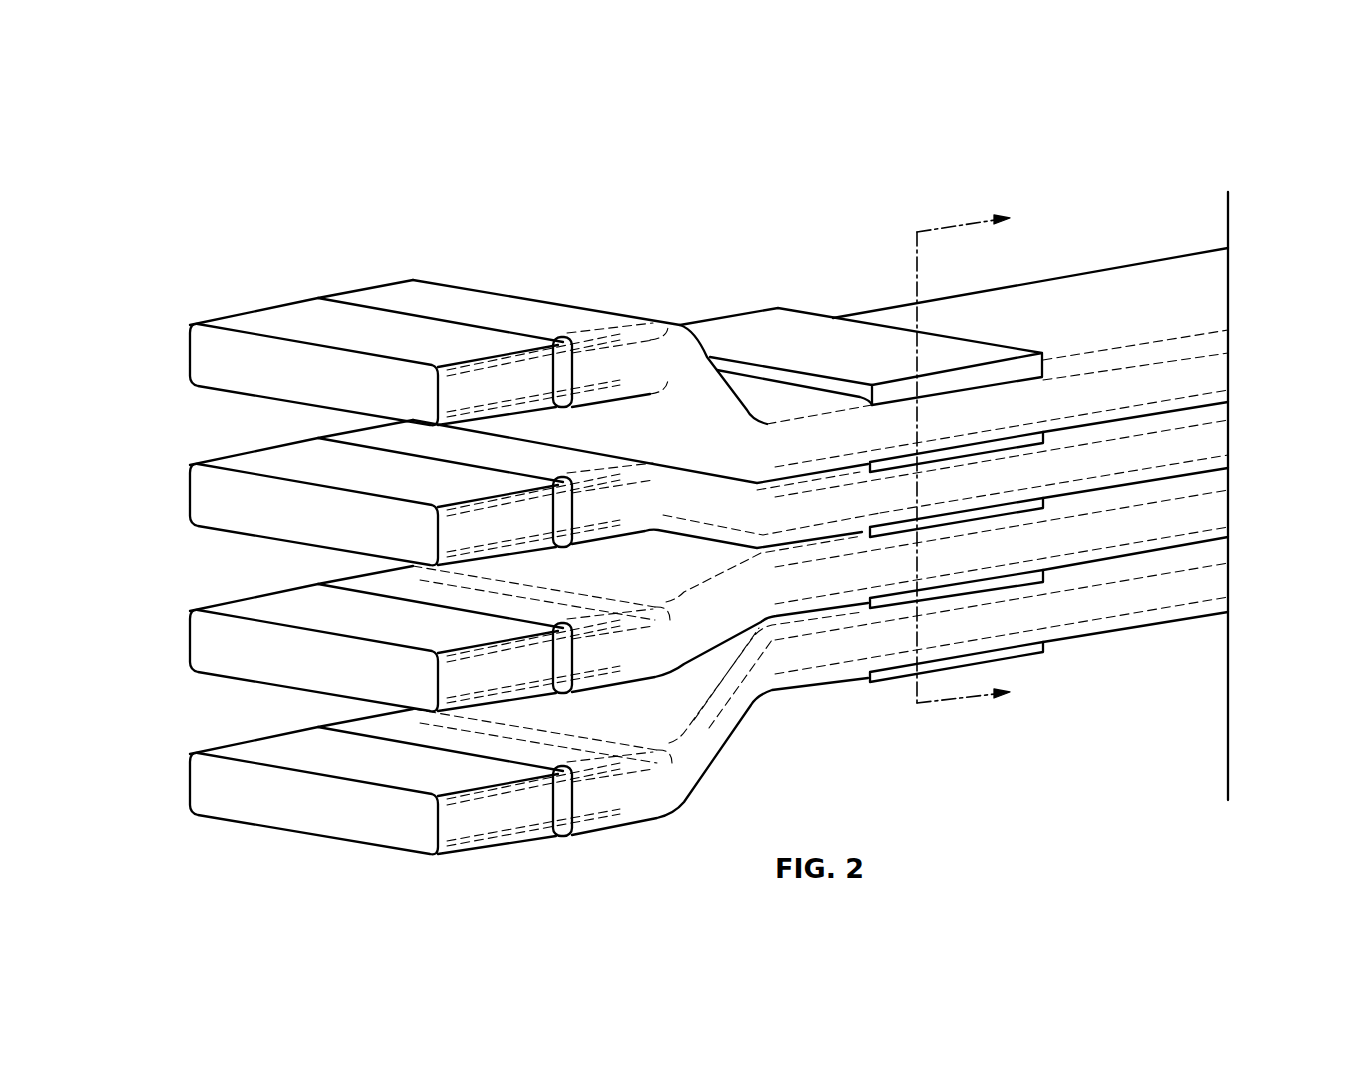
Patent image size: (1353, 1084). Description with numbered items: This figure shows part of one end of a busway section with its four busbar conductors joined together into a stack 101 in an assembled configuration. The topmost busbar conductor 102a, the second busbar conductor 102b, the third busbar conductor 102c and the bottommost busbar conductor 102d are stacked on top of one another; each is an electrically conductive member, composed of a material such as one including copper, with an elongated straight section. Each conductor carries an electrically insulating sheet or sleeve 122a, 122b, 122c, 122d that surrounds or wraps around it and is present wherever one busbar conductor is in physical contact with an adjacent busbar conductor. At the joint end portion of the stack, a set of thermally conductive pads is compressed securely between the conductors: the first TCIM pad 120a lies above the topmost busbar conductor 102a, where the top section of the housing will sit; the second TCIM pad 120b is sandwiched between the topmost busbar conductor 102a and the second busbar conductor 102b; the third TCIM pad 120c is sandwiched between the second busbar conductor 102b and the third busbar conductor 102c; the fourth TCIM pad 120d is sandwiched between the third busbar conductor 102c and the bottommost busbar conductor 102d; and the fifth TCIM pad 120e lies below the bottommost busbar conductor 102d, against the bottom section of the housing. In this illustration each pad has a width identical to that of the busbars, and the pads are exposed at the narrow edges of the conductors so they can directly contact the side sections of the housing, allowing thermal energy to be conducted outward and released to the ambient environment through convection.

The stack 101 is at (1176, 152).
The topmost busbar conductor 102a is at (207, 353).
The second busbar conductor 102b is at (207, 491).
The third busbar conductor 102c is at (207, 636).
The bottommost busbar conductor 102d is at (207, 781).
The electrically insulating sleeve 122a is at (385, 297).
The electrically insulating sleeve 122b is at (385, 437).
The electrically insulating sleeve 122c is at (385, 583).
The electrically insulating sleeve 122d is at (387, 726).
The first TCIM pad 120a is at (1043, 378).
The second TCIM pad 120b is at (1043, 445).
The third TCIM pad 120c is at (1043, 510).
The fourth TCIM pad 120d is at (1043, 583).
The fifth TCIM pad 120e is at (1043, 653).